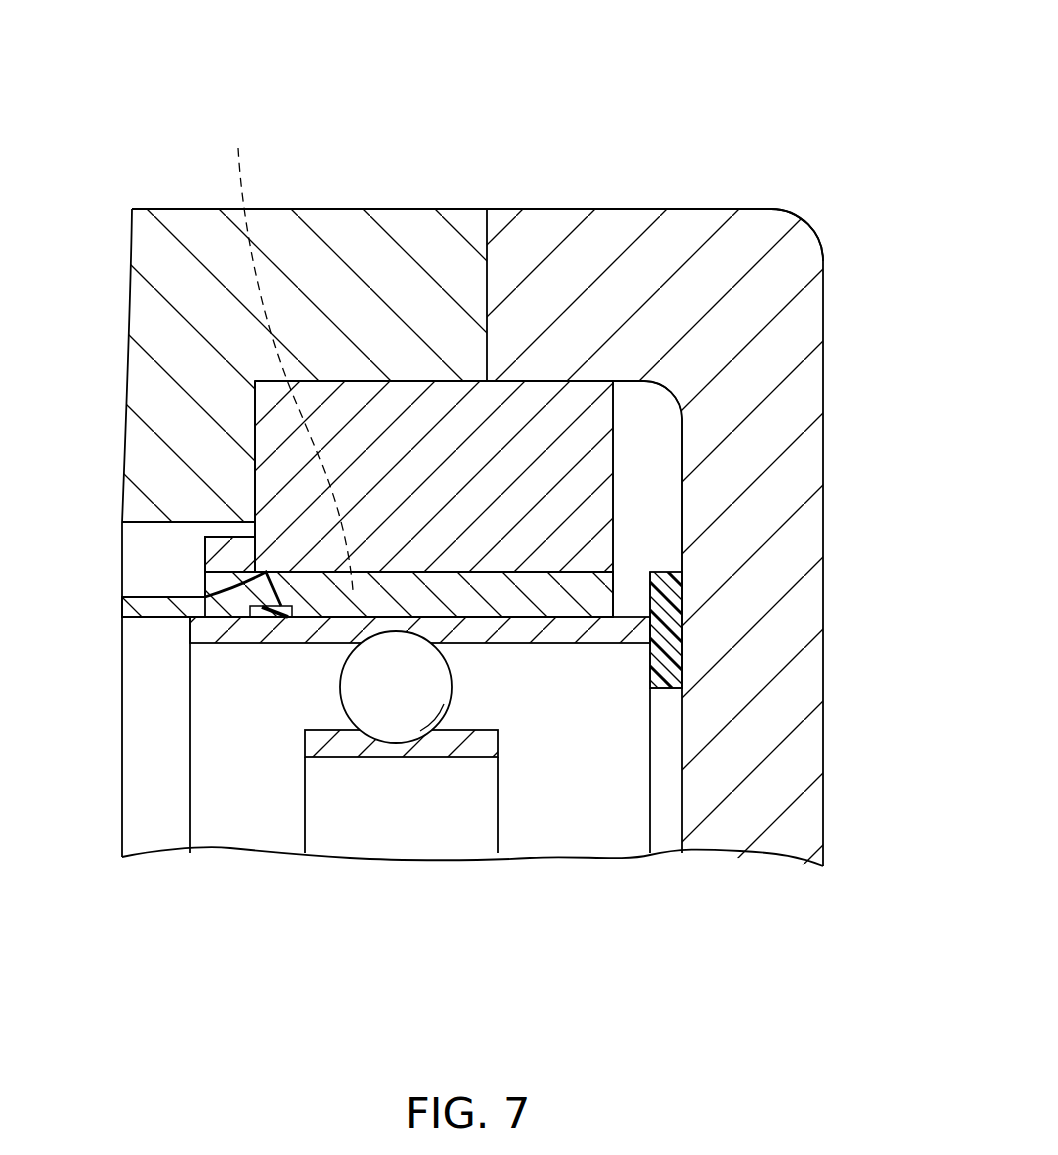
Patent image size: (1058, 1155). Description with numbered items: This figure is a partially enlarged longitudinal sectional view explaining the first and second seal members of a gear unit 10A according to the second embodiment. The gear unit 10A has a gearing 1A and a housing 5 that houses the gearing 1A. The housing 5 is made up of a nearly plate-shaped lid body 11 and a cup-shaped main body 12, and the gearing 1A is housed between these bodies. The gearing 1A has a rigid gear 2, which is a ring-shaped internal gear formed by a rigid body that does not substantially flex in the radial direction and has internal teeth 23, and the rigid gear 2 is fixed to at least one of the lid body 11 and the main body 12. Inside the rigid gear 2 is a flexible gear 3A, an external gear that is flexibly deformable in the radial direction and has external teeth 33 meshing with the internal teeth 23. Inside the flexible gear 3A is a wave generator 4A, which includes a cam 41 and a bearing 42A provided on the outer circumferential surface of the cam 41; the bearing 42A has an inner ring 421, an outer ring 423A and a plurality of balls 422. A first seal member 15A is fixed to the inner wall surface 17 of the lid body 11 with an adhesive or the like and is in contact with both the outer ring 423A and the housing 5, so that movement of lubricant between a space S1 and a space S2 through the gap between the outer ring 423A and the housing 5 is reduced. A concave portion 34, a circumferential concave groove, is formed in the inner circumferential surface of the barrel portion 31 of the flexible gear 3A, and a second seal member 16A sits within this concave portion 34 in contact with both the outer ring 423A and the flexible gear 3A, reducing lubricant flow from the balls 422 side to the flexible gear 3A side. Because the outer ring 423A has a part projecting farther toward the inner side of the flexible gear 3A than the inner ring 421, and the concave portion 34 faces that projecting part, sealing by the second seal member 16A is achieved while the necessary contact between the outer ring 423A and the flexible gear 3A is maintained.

The gear unit 10A is at (776, 87).
The internal teeth 23 is at (286, 354).
The main body 12 is at (333, 228).
The rigid gear 2 is at (416, 362).
The lid body 11 is at (698, 232).
The housing 5 is at (809, 199).
The external teeth 33 is at (316, 582).
The concave portion 34 is at (266, 572).
The flexible gear 3A is at (148, 583).
The barrel portion 31 is at (150, 612).
The second seal member 16A is at (250, 627).
The inner wall surface 17 is at (678, 530).
The gearing 1A is at (656, 552).
The bearing 42A is at (168, 806).
The cam 41 is at (286, 805).
The wave generator 4A is at (284, 796).
The inner ring 421 is at (352, 743).
The balls 422 is at (398, 722).
The outer ring 423A is at (547, 643).
The first seal member 15A is at (663, 650).
The space S1 is at (648, 737).
The space S2 is at (662, 467).